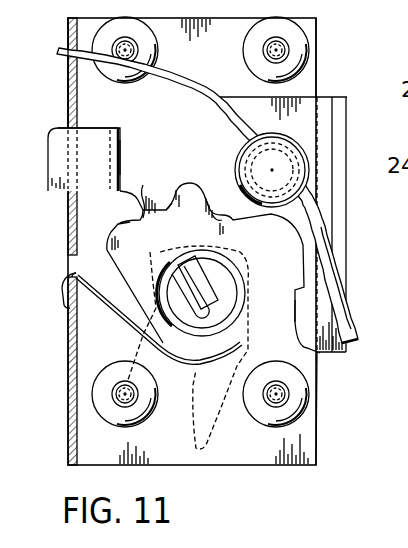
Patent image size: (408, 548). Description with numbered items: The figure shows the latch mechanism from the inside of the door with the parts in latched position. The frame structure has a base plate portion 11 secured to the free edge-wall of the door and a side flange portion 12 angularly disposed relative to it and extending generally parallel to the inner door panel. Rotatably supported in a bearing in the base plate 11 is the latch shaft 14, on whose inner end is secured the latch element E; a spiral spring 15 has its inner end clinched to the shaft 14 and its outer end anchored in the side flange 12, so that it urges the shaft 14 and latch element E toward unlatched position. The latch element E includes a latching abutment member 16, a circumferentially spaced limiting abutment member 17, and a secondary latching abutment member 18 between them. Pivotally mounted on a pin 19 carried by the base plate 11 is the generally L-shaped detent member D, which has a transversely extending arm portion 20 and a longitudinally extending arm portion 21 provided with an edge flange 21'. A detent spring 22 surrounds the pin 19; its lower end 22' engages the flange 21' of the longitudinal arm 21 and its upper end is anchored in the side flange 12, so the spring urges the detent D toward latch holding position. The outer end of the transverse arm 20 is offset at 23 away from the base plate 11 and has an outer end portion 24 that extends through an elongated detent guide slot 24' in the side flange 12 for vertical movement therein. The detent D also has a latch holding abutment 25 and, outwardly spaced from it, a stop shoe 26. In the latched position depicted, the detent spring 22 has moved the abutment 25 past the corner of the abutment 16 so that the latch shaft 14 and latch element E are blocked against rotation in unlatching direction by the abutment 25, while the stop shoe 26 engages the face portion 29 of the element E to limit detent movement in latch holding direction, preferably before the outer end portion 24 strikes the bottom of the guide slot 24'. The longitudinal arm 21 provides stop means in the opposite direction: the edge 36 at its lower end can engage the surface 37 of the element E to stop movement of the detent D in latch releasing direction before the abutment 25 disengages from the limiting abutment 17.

The base plate portion 11 is at (318, 437).
The side flange portion 12 is at (68, 400).
The latch shaft 14 is at (203, 283).
The spiral spring 15 is at (113, 307).
The latching abutment member 16 is at (220, 223).
The limiting abutment member 17 is at (126, 226).
The secondary latching abutment member 18 is at (168, 213).
The pin 19 is at (281, 150).
The transversely extending arm portion 20 is at (131, 117).
The longitudinally extending arm portion 21 is at (338, 408).
The edge flange 21' is at (353, 224).
The detent spring 22 is at (207, 195).
The lower end of detent spring 22' is at (356, 285).
The offset 23 is at (124, 157).
The outer end portion 24 is at (66, 159).
The detent guide slot 24' is at (44, 73).
The latch holding abutment 25 is at (217, 200).
The stop shoe 26 is at (148, 190).
The face portion 29 is at (188, 340).
The edge 36 is at (298, 326).
The surface 37 is at (252, 306).
The detent member D is at (304, 96).
The latch element E is at (122, 272).